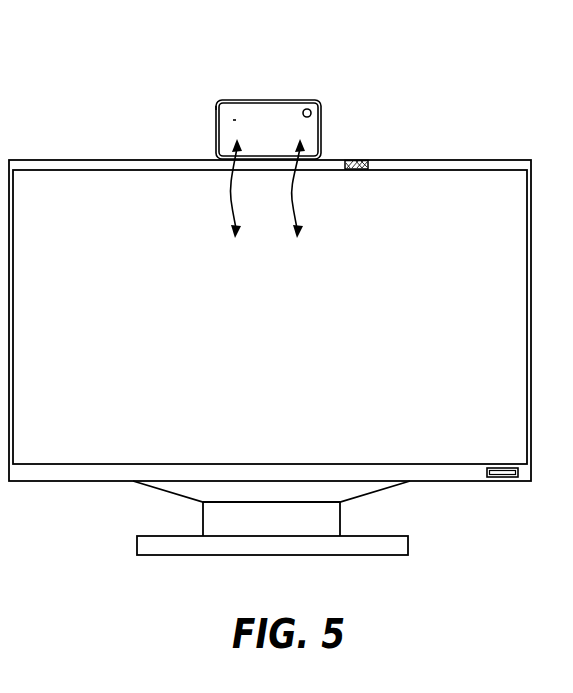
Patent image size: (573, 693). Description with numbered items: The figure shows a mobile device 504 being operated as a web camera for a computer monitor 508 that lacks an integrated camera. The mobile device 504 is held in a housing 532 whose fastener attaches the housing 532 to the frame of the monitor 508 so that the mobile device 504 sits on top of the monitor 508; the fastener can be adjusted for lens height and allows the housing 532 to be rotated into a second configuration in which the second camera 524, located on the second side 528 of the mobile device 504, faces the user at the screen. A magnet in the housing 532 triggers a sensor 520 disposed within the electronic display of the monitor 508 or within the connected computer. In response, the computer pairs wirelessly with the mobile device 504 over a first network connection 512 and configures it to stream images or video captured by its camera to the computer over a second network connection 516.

The mobile device 504 is at (237, 100).
The computer monitor 508 is at (70, 185).
The first movement direction arrow 512 is at (228, 203).
The second network connection 516 is at (298, 184).
The sensor 520 is at (360, 160).
The second camera 524 is at (312, 108).
The second side 528 is at (234, 120).
The housing 532 is at (217, 101).